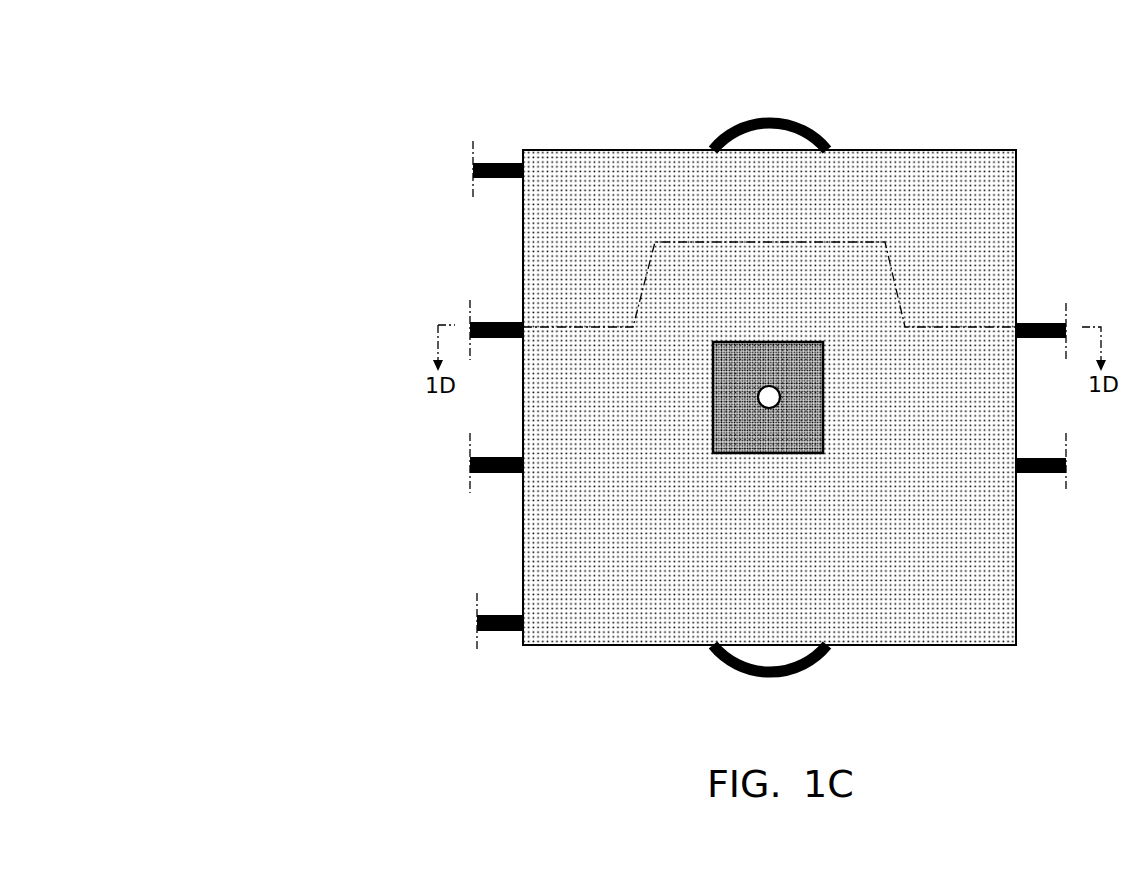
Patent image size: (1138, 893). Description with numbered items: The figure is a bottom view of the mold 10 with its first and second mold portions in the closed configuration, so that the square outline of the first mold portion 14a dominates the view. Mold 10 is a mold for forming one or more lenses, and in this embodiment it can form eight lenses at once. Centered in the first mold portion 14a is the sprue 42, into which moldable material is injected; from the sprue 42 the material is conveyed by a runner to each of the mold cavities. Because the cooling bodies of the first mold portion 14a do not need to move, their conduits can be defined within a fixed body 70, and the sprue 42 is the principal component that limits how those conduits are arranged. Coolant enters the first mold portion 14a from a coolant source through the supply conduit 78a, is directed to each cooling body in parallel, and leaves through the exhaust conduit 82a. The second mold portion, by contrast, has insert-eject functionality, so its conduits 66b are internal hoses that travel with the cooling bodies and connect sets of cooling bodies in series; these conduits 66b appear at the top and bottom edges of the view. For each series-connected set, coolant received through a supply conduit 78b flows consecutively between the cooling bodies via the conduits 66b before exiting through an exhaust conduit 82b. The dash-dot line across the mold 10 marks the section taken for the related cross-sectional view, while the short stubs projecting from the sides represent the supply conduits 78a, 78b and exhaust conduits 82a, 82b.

The mold 10 is at (275, 63).
The first mold portion 14a is at (995, 177).
The sprue 42 is at (769, 397).
The conduits 66b is at (743, 132).
The fixed body 70 is at (769, 397).
The supply conduit 78a is at (504, 165).
The supply conduit 78b is at (494, 322).
The exhaust conduit 82a is at (504, 632).
The exhaust conduit 82b is at (1043, 322).